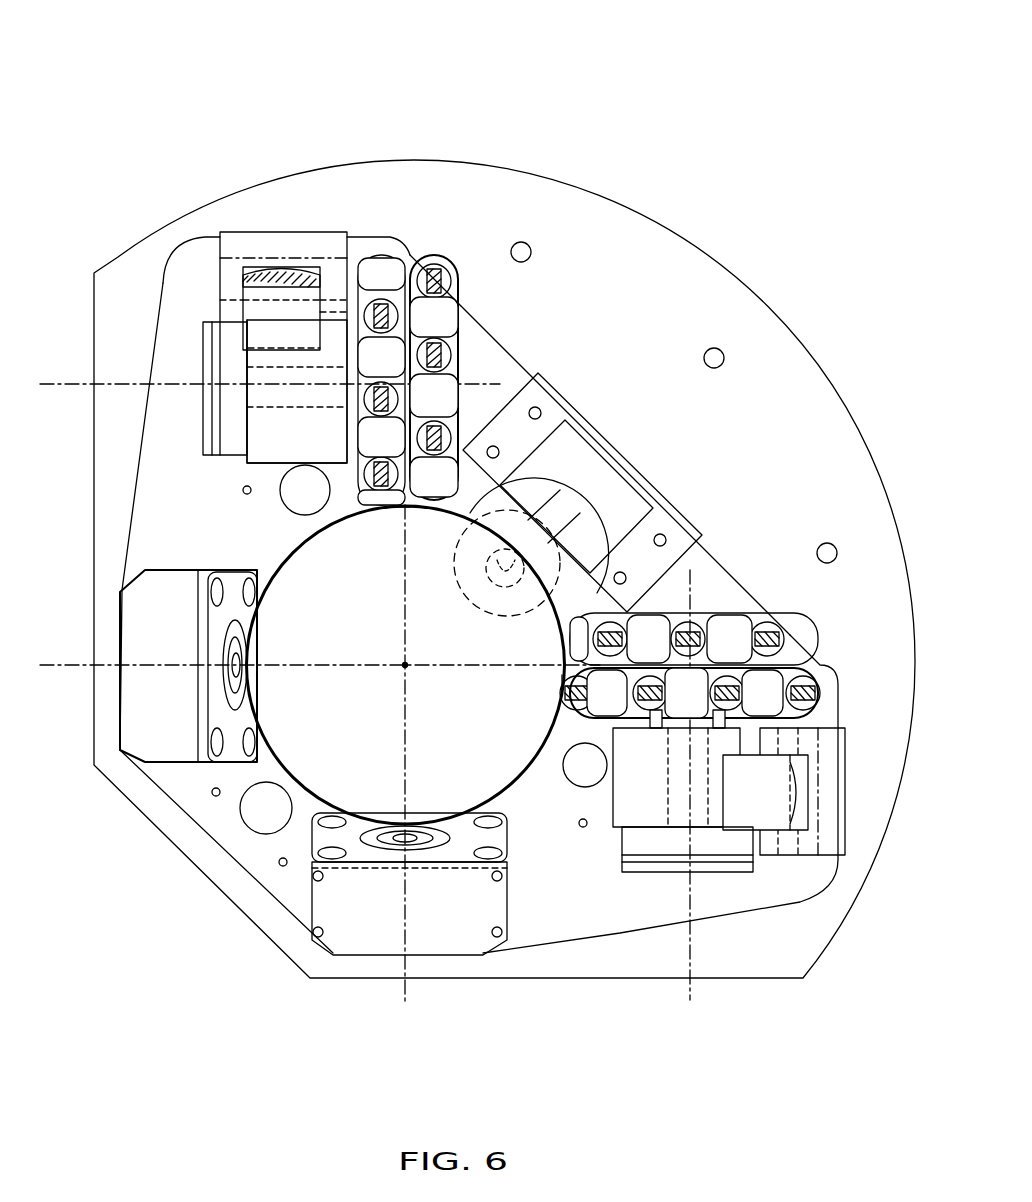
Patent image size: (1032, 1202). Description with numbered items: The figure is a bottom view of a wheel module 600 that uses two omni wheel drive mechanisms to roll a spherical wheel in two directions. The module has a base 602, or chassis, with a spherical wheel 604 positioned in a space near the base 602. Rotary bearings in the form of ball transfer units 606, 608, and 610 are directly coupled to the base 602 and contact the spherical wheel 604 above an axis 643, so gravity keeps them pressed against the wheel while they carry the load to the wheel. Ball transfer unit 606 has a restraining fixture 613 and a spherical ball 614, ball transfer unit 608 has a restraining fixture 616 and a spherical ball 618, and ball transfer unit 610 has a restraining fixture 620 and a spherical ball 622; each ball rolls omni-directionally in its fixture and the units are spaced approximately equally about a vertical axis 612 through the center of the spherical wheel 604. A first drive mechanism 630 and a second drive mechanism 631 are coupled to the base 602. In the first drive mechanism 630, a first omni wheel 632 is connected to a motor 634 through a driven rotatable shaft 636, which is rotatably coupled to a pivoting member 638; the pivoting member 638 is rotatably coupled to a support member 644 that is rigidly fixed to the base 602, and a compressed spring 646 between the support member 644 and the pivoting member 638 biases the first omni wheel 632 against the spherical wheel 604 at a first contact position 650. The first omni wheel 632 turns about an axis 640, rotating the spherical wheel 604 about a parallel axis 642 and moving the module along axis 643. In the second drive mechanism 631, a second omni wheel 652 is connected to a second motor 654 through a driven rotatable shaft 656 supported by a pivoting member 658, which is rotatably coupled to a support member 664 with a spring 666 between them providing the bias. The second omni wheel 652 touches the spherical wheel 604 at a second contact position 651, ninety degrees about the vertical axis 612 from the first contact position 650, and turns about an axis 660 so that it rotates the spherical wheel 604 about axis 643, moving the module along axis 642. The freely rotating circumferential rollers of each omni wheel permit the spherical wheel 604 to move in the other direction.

The wheel module 600 is at (228, 98).
The base 602 is at (654, 316).
The spherical wheel 604 is at (356, 617).
The ball transfer unit 606 is at (509, 466).
The ball transfer unit 608 is at (340, 891).
The ball transfer unit 610 is at (181, 628).
The vertical axis 612 is at (411, 675).
The restraining fixture 613 is at (583, 537).
The spherical ball 614 is at (497, 566).
The restraining fixture 616 is at (440, 877).
The spherical ball 618 is at (418, 822).
The restraining fixture 620 is at (155, 692).
The spherical ball 622 is at (245, 672).
The first drive mechanism 630 is at (708, 764).
The second drive mechanism 631 is at (300, 473).
The first omni wheel 632 is at (783, 612).
The motor 634 is at (715, 843).
The driven rotatable shaft 636 is at (703, 745).
The pivoting member 638 is at (720, 790).
The axis 640 is at (712, 580).
The axis 642 is at (401, 1000).
The axis 643 is at (70, 665).
The support member 644 is at (835, 818).
The spring 646 is at (795, 792).
The first contact position 650 is at (558, 683).
The second contact position 651 is at (398, 516).
The second omni wheel 652 is at (431, 252).
The second motor 654 is at (227, 407).
The driven rotatable shaft 656 is at (283, 397).
The pivoting member 658 is at (333, 335).
The axis 660 is at (80, 382).
The support member 664 is at (278, 248).
The spring 666 is at (302, 278).